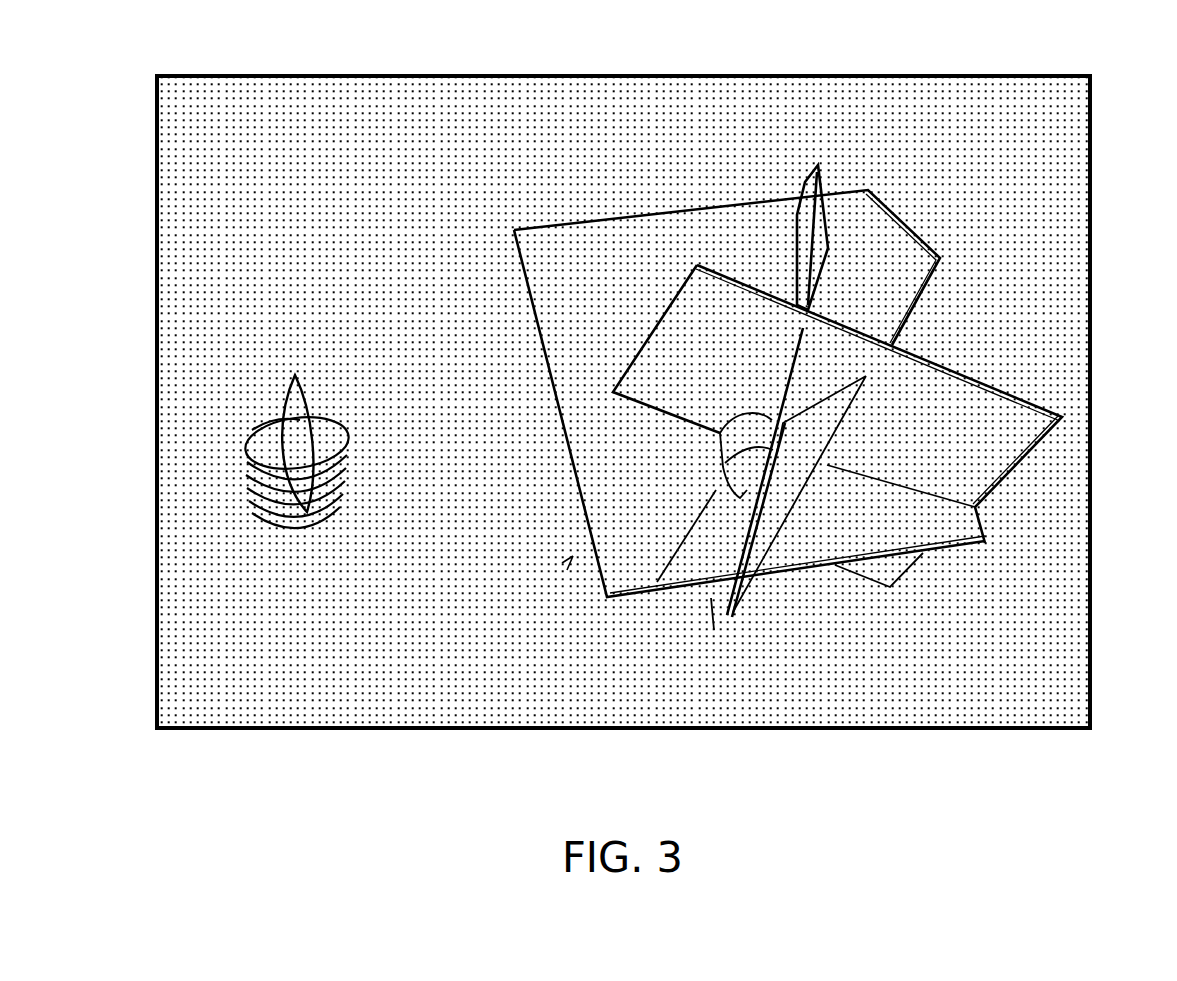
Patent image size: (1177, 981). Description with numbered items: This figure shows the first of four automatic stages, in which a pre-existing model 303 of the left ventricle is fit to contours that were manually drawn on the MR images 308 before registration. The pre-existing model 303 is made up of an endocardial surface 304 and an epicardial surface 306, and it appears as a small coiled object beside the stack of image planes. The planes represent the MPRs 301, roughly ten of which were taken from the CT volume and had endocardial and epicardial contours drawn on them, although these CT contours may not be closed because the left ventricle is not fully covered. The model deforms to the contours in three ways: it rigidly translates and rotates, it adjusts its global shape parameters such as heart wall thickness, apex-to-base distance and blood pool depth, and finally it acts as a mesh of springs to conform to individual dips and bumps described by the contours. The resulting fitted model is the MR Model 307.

The MPRs 301 is at (918, 250).
The pre-existing model 303 is at (307, 515).
The endocardial surface 304 is at (263, 427).
The epicardial surface 306 is at (295, 375).
The MR Model 307 is at (655, 587).
The MR images 308 is at (573, 556).